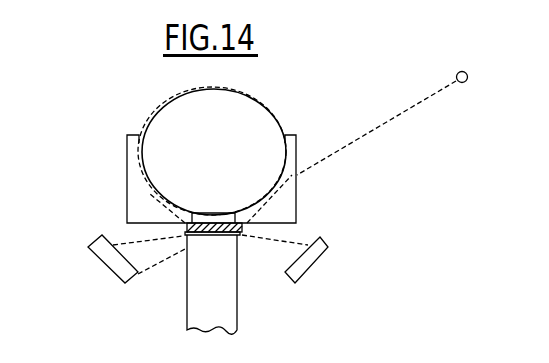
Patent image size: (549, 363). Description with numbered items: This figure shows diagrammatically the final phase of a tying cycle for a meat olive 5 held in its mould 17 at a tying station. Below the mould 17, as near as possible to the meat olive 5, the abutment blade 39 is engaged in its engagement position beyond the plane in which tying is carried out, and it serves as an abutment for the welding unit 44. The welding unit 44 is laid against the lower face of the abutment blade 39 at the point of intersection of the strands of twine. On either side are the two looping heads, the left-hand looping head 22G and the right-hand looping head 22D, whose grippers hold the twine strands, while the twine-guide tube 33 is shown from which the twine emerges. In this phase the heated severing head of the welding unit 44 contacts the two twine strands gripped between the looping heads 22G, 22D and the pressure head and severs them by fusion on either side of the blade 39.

The meat olive 5 is at (247, 125).
The mould 17 is at (139, 193).
The abutment blade 39 is at (216, 222).
The welding unit 44 is at (212, 303).
The right-hand looping head 22D is at (118, 263).
The left-hand looping head 22G is at (302, 263).
The twine-guide tube 33 is at (466, 82).